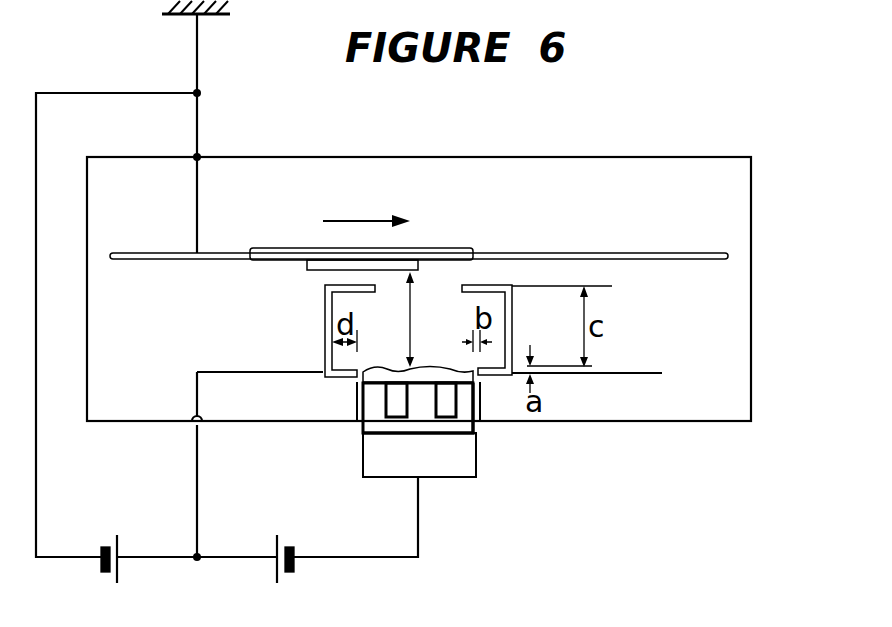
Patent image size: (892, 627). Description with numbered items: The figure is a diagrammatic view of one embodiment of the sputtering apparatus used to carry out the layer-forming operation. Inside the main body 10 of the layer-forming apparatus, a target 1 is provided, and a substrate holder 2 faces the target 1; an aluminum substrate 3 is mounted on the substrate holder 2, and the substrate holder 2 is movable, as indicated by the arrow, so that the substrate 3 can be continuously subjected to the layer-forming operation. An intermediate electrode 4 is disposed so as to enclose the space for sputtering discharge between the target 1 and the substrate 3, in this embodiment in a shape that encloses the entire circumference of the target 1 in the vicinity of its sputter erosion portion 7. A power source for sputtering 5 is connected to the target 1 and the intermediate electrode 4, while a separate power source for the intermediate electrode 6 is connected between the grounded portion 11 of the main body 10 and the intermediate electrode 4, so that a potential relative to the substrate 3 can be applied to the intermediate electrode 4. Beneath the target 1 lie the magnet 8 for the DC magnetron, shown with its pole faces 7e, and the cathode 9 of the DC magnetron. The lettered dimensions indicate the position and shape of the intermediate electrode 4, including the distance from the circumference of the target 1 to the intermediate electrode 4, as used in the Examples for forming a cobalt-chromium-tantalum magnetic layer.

The target 1 is at (427, 367).
The substrate holder 2 is at (445, 247).
The substrate 3 is at (310, 272).
The intermediate electrode 4 is at (325, 305).
The power source for sputtering 5 is at (285, 578).
The power source for the intermediate electrode 6 is at (110, 578).
The sputter erosion portion of the target 7 is at (450, 358).
The magnet core 7e is at (387, 358).
The magnet for a DC magnetron 8 is at (460, 433).
The cathode of the DC magnetron 9 is at (443, 478).
The main body of the layer-forming apparatus 10 is at (519, 157).
The grounded portion of the main body 11 is at (207, 15).